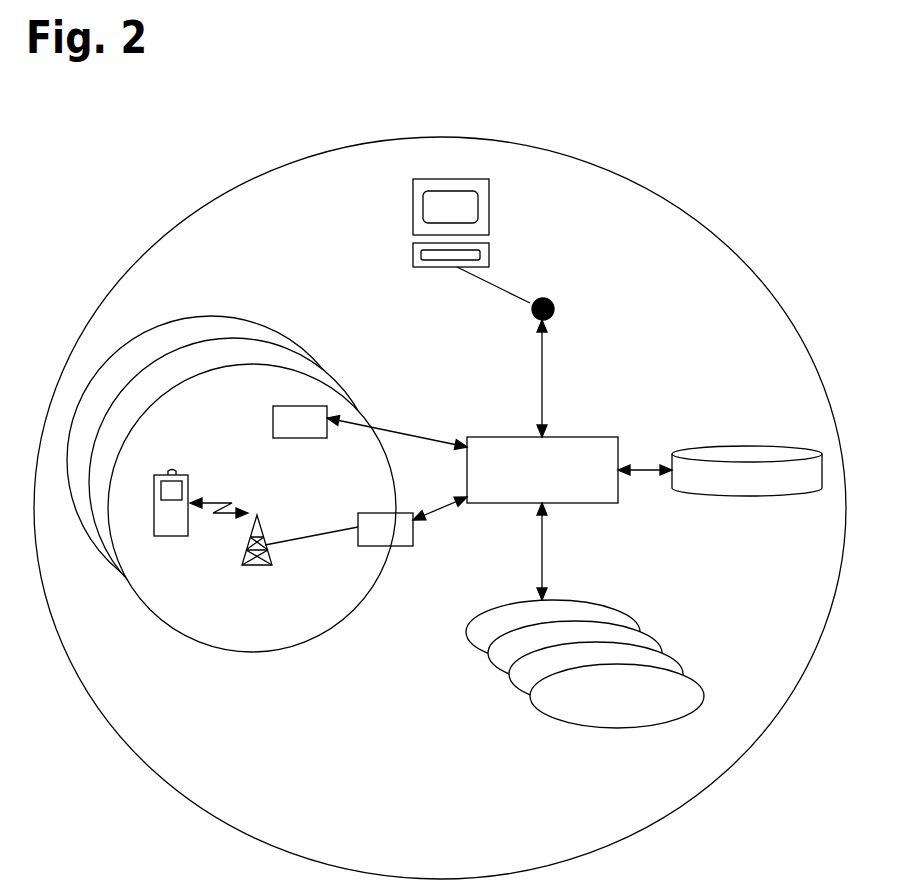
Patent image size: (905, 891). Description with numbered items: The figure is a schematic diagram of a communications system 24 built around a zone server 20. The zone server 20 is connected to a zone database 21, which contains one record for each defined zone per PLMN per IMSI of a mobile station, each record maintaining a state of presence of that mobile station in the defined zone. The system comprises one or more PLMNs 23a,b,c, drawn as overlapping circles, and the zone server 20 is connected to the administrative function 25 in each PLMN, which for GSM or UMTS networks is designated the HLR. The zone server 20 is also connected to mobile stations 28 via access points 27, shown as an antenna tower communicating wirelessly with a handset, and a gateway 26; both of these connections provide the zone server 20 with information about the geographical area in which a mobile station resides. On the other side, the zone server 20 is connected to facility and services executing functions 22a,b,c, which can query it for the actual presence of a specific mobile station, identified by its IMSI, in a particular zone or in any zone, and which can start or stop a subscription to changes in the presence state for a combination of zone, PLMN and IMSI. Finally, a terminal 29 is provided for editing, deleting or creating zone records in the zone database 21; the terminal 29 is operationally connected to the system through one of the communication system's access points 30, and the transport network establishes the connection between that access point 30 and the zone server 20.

The zone server 20 is at (604, 503).
The zone database 21 is at (743, 458).
The facility and services executing functions 22a,b,c is at (650, 648).
The PLMNs 23a,b,c is at (305, 370).
The system 24 is at (706, 228).
The administrative function 25 is at (273, 407).
The gateway 26 is at (393, 546).
The access points 27 is at (255, 568).
The mobile stations 28 is at (172, 536).
The terminal 29 is at (489, 215).
The access point 30 is at (554, 305).